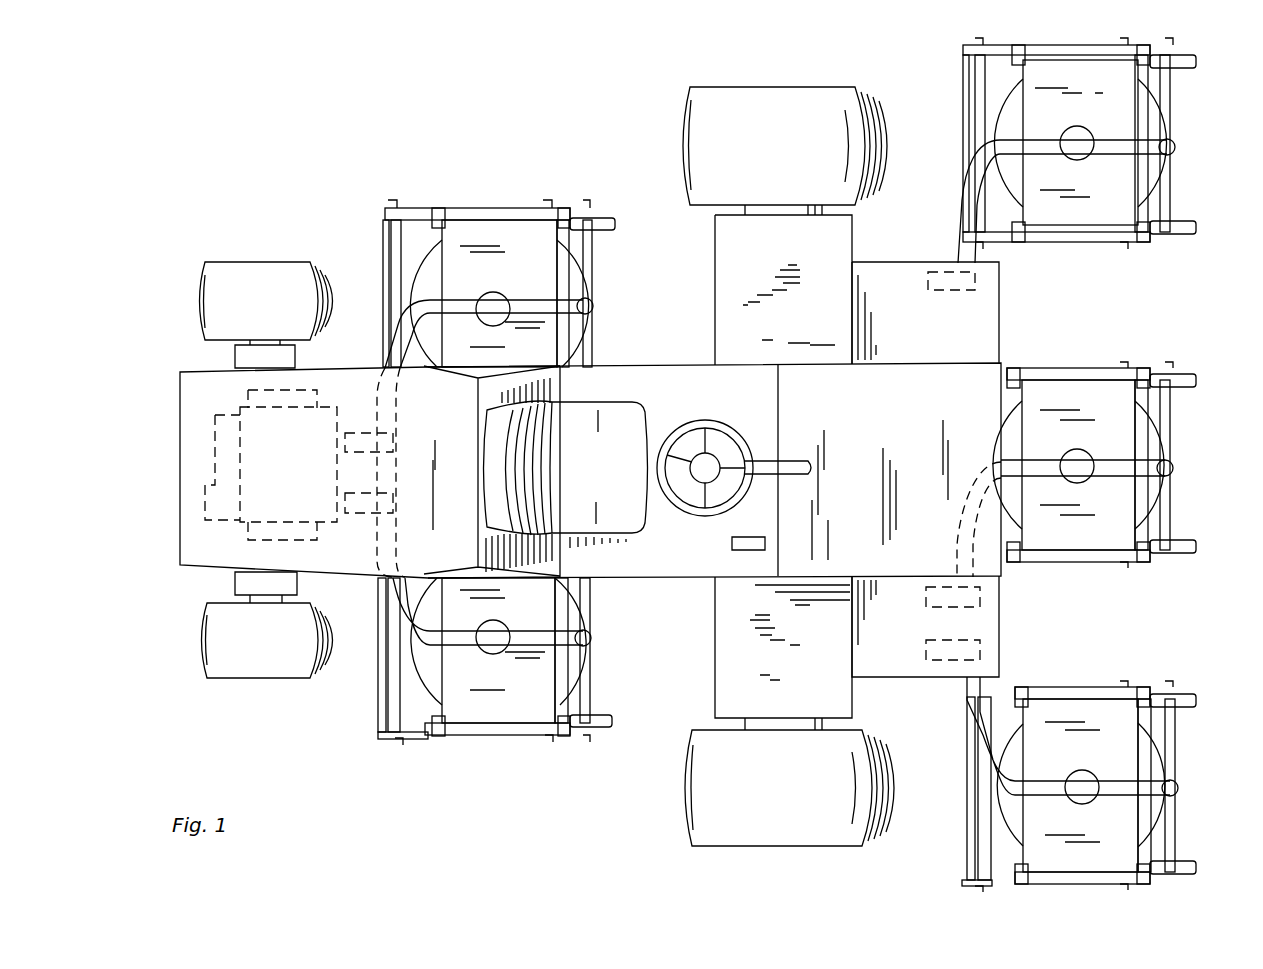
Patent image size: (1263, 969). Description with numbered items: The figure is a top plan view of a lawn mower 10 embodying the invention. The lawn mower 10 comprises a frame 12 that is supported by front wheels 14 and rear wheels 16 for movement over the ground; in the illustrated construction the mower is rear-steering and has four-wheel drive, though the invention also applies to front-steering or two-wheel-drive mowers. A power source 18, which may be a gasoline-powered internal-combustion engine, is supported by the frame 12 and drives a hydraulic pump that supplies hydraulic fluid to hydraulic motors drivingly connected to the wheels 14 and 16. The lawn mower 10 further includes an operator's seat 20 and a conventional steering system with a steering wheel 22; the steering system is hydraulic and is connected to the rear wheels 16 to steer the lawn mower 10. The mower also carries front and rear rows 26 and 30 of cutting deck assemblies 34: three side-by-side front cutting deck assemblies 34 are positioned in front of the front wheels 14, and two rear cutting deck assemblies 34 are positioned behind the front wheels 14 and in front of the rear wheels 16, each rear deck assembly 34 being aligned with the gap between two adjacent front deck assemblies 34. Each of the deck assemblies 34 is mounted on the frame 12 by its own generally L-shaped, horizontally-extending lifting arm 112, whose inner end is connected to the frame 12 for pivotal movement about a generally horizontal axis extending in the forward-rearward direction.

The lawn mower 10 is at (235, 144).
The frame 12 is at (180, 566).
The front wheels 14 is at (778, 98).
The rear wheels 16 is at (262, 270).
The power source 18 is at (235, 446).
The operator's seat 20 is at (620, 476).
The steering wheel 22 is at (690, 420).
The front row 26 is at (1062, 909).
The rear row 30 is at (507, 758).
The cutting deck assemblies 34 is at (1202, 133).
The lifting arm 112 is at (560, 305).